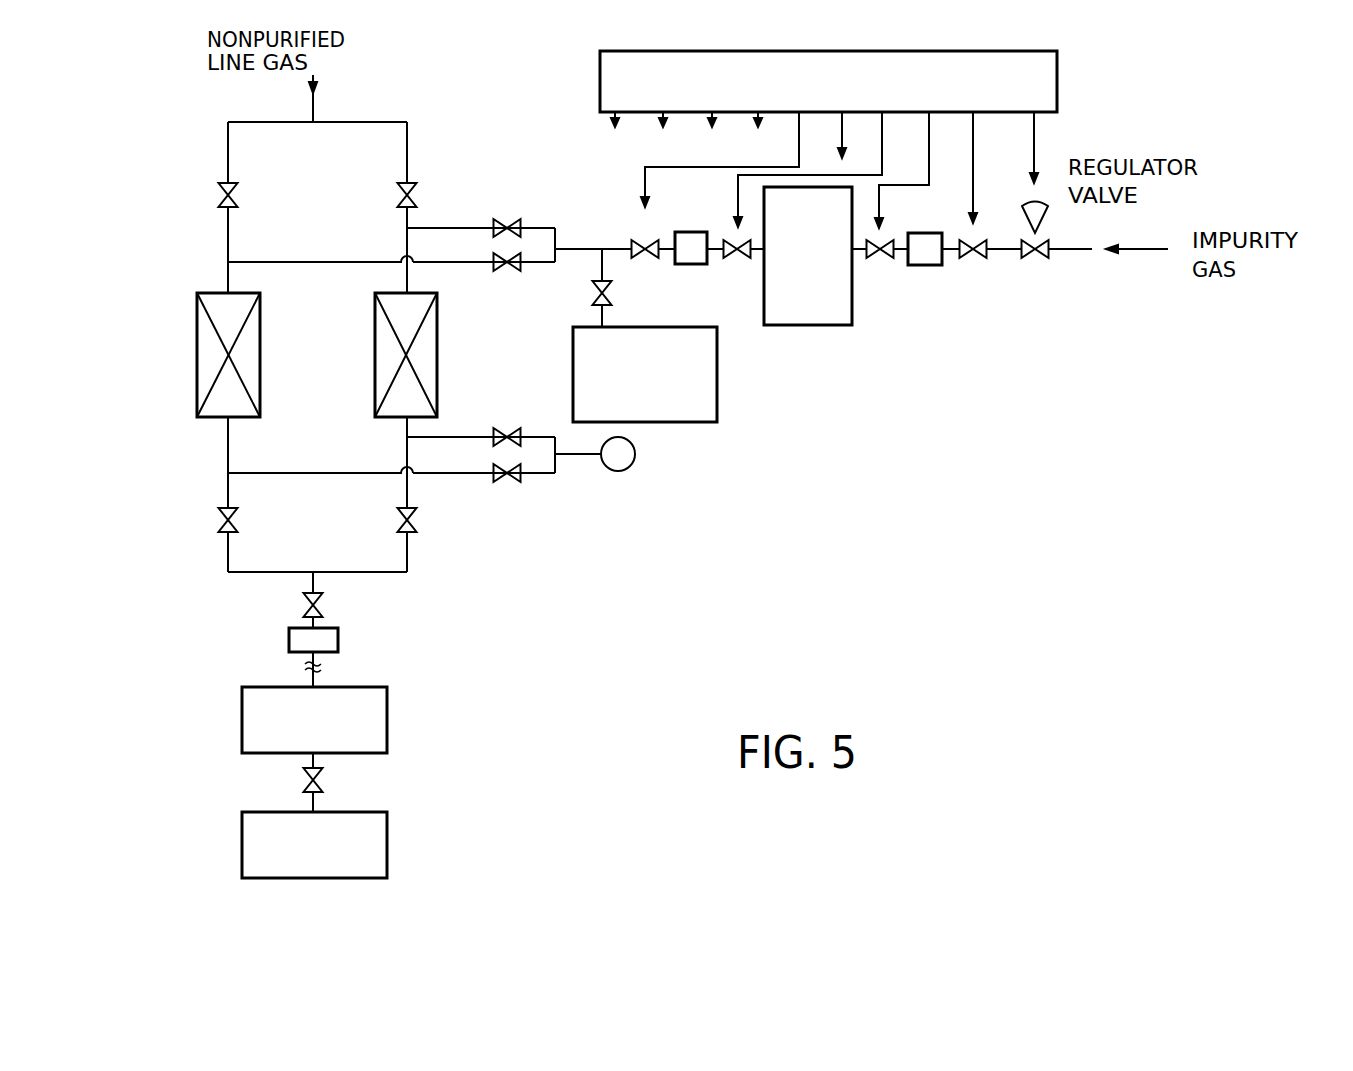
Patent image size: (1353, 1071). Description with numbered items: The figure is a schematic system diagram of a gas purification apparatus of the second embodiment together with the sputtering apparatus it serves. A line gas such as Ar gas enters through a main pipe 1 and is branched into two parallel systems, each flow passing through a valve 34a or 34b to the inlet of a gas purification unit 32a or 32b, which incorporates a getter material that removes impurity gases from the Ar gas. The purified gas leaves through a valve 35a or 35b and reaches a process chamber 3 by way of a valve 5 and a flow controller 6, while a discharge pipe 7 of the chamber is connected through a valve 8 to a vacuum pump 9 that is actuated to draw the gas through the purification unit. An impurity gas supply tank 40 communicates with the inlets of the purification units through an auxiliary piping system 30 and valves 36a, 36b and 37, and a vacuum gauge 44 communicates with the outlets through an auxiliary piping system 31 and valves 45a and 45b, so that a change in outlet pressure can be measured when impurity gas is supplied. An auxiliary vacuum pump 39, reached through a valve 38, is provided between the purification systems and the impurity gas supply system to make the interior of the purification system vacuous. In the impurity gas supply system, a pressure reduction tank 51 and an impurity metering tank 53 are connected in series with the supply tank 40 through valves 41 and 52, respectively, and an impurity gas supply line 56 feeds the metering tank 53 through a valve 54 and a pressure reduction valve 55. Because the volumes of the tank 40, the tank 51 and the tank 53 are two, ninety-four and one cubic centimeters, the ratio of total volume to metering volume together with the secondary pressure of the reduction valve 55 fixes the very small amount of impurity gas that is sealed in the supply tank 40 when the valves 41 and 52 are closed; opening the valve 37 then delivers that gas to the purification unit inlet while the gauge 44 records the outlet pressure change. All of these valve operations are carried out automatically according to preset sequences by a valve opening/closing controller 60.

The main pipe 1 is at (315, 110).
The process chamber 3 is at (387, 722).
The valve 5 is at (302, 604).
The flow controller 6 is at (338, 640).
The discharge pipe 7 is at (315, 762).
The valve 8 is at (302, 780).
The vacuum pump 9 is at (387, 848).
The auxiliary piping system 30 is at (584, 233).
The auxiliary piping system 31 is at (530, 530).
The gas purification unit 32a is at (260, 325).
The gas purification unit 32b is at (375, 382).
The valve 34a is at (237, 197).
The valve 34b is at (396, 206).
The valve 35a is at (236, 530).
The valve 35b is at (414, 530).
The valve 36a is at (495, 261).
The valve 36b is at (490, 222).
The valve 37 is at (640, 243).
The valve 38 is at (592, 294).
The auxiliary vacuum pump 39 is at (717, 402).
The impurity gas supply tank 40 is at (673, 237).
The valve 41 is at (735, 262).
The vacuum gauge 44 is at (631, 466).
The valve 45a is at (520, 480).
The valve 45b is at (492, 438).
The pressure reduction tank 51 is at (805, 325).
The valve 52 is at (876, 262).
The impurity metering tank 53 is at (925, 265).
The valve 54 is at (973, 262).
The pressure reduction valve 55 is at (1033, 262).
The impurity gas supply line 56 is at (1078, 262).
The valve opening/closing controller 60 is at (1057, 88).